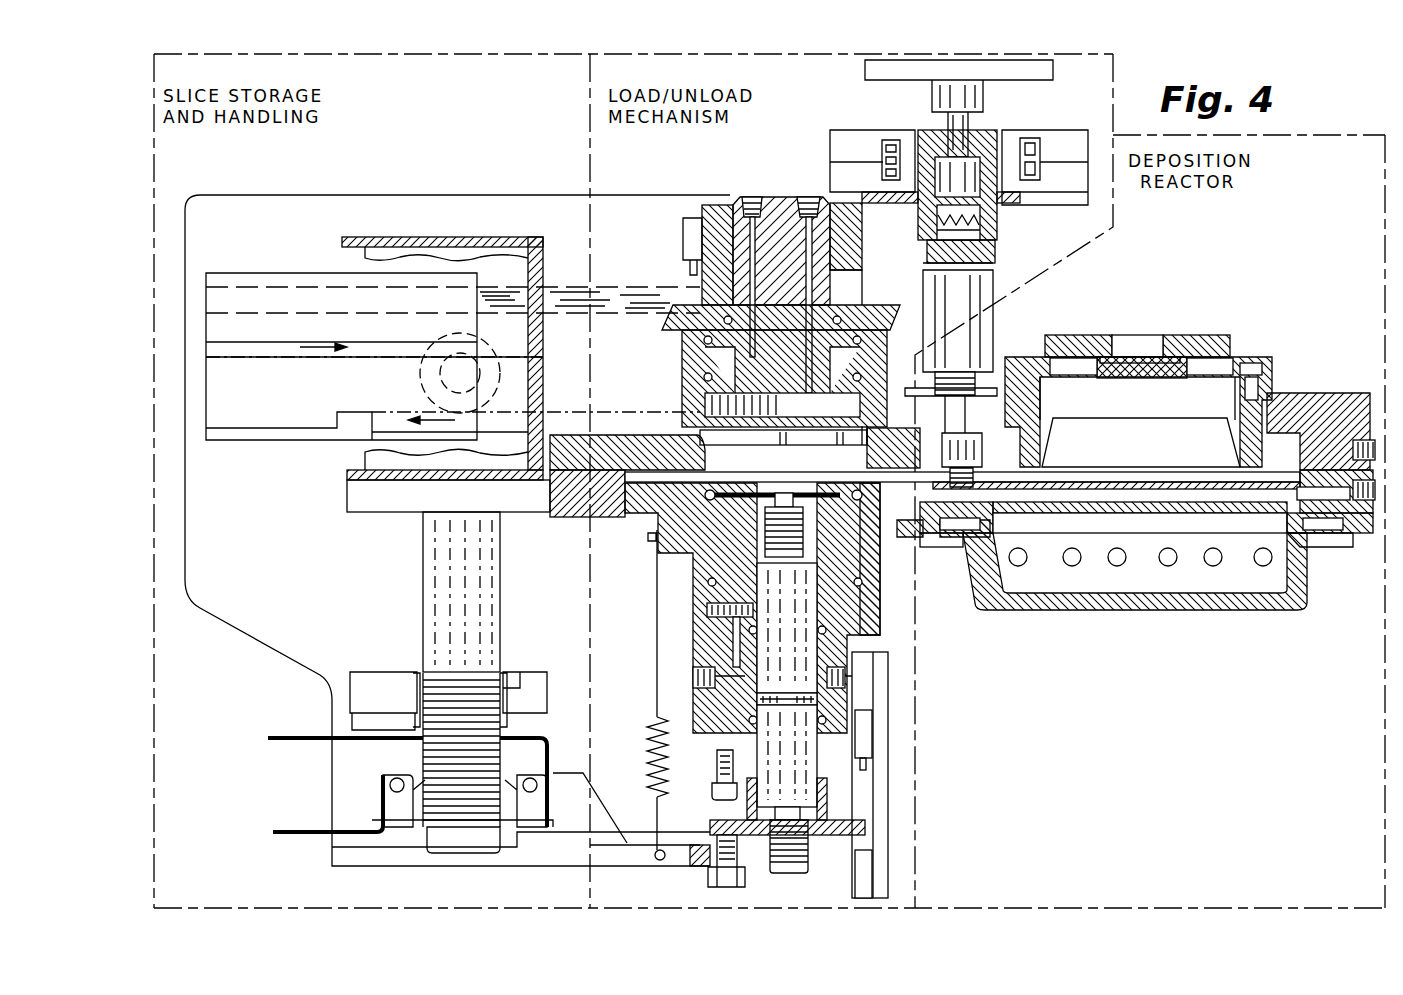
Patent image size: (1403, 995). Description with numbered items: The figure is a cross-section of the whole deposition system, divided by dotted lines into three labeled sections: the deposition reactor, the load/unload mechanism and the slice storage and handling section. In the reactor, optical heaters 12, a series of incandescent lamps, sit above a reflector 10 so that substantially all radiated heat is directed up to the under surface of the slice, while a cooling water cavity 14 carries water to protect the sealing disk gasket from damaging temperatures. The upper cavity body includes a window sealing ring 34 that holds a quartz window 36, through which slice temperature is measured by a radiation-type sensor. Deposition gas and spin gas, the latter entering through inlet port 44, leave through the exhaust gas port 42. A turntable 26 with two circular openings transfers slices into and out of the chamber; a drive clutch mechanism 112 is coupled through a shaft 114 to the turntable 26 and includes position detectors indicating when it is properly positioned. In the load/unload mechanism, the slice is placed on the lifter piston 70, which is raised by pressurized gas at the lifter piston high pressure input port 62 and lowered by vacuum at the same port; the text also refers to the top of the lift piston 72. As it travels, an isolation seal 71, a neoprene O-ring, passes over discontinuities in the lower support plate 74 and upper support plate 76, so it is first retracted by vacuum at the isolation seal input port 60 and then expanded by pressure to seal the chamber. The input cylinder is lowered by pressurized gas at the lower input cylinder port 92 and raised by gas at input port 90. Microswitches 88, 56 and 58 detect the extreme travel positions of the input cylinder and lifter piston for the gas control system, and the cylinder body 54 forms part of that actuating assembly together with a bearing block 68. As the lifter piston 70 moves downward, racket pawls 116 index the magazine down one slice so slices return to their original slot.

The reflector 10 is at (1224, 606).
The optical heaters 12 is at (1167, 566).
The cooling water cavity 14 is at (1330, 530).
The turntable 26 is at (910, 470).
The window sealing ring 34 is at (1230, 345).
The window 36 is at (1138, 352).
The exhaust gas port 42 is at (1378, 445).
The spin gas inlet port 44 is at (1373, 505).
The pneumatic cylinder 54 is at (808, 762).
The microswitch 56 is at (865, 722).
The microswitch 58 is at (875, 862).
The isolation seal input port 60 is at (850, 678).
The lifter piston high pressure input port 62 is at (693, 683).
The bearing block 68 is at (710, 603).
The lifter piston 70 is at (715, 553).
The isolation seal 71 is at (708, 490).
The lift piston 72 is at (870, 618).
The lower support plate 74 is at (572, 500).
The upper support plate 76 is at (627, 440).
The microswitch 88 is at (690, 240).
The input port 90 is at (753, 197).
The lower input cylinder port 92 is at (808, 197).
The drive clutch mechanism 112 is at (845, 165).
The shaft 114 is at (937, 416).
The racket pawls 116 is at (393, 815).